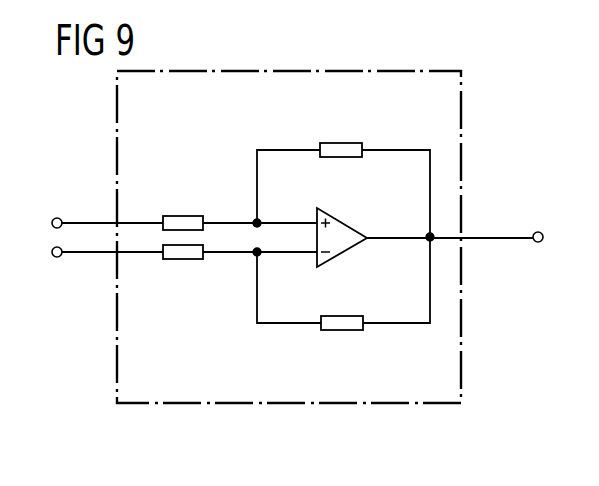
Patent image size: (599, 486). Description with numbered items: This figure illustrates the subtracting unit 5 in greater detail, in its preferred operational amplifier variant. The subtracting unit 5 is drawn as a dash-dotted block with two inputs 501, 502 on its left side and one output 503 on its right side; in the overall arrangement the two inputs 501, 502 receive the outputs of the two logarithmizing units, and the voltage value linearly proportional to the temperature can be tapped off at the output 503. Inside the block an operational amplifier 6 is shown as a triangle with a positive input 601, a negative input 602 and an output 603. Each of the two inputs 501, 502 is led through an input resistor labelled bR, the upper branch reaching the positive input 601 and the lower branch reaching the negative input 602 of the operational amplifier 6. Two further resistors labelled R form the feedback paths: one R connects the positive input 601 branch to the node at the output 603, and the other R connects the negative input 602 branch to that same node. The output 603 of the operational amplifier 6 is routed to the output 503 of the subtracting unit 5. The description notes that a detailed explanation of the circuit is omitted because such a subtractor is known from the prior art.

The subtracting unit 5 is at (462, 305).
The input of the subtracting unit 501 is at (114, 221).
The input of the subtracting unit 502 is at (114, 255).
The output of the subtracting unit 503 is at (462, 235).
The operational amplifier 6 is at (347, 257).
The positive input of the operational amplifier 601 is at (287, 220).
The negative input of the operational amplifier 602 is at (287, 255).
The output of the operational amplifier 603 is at (384, 234).
The feedback resistor R is at (342, 143).
The input resistor bR is at (183, 215).